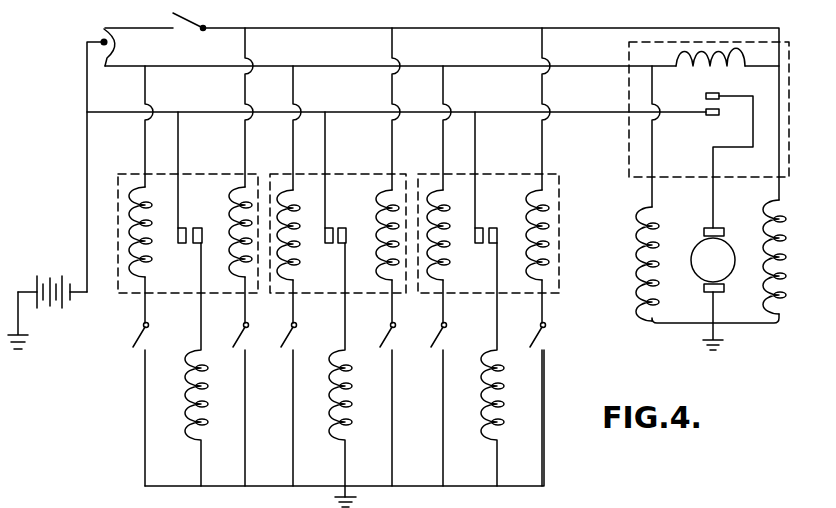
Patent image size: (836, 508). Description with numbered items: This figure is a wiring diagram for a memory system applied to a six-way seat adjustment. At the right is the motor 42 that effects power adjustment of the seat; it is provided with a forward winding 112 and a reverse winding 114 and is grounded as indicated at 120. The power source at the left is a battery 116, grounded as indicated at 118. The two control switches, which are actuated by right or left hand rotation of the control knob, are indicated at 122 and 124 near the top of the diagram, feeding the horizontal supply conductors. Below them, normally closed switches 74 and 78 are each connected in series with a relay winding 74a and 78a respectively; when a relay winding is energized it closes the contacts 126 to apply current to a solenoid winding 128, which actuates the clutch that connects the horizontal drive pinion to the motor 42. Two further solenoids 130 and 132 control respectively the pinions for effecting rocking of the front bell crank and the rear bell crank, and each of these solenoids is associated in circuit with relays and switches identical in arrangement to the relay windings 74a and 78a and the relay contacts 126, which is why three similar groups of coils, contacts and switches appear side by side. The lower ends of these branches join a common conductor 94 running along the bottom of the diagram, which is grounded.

The motor 42 is at (728, 268).
The normally closed switch 74 is at (239, 351).
The relay winding 74a is at (247, 203).
The normally closed switch 78 is at (140, 348).
The relay winding 78a is at (135, 202).
The common conductor 94 is at (344, 429).
The forward winding 112 is at (636, 292).
The reverse winding 114 is at (762, 312).
The battery 116 is at (65, 308).
The ground 118 is at (28, 350).
The ground 120 is at (721, 356).
The control switch 122 is at (118, 56).
The control switch 124 is at (103, 27).
The relay contacts 126 is at (182, 244).
The solenoid winding 128 is at (190, 433).
The solenoid 130 is at (340, 433).
The solenoid 132 is at (487, 433).